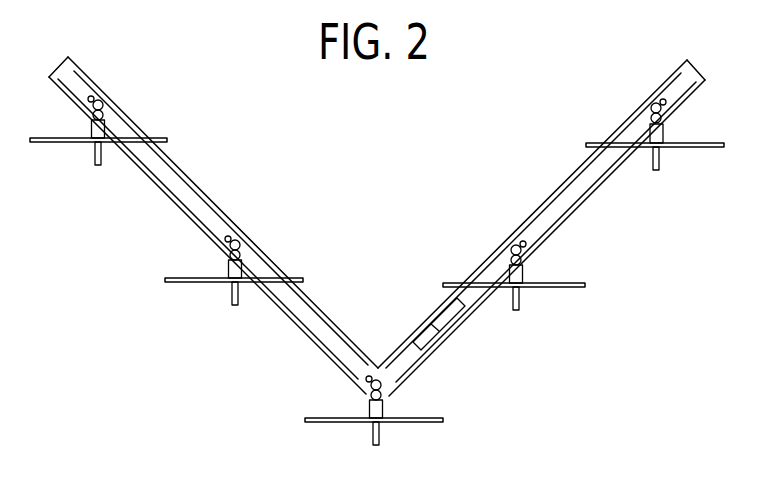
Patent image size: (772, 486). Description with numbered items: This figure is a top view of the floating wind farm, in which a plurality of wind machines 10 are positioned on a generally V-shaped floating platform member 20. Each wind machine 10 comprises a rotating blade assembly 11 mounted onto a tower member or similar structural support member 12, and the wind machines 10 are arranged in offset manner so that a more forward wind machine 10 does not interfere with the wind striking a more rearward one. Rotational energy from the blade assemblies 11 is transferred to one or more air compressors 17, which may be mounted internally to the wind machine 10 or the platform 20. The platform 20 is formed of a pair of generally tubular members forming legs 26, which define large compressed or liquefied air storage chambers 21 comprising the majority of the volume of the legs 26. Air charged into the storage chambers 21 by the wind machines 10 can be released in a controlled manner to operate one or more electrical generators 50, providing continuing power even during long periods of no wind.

The wind machine 10 is at (543, 333).
The rotating blade assembly 11 is at (680, 148).
The tower member 12 is at (650, 100).
The air compressor 17 is at (100, 100).
The floating platform member 20 is at (222, 115).
The storage chamber 21 is at (310, 300).
The leg 26 is at (50, 66).
The electrical generator 50 is at (427, 323).